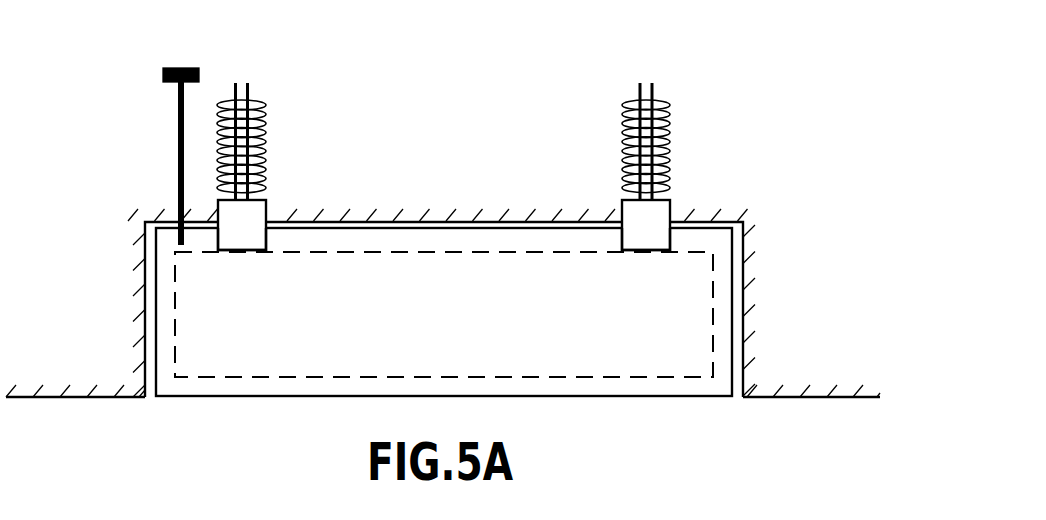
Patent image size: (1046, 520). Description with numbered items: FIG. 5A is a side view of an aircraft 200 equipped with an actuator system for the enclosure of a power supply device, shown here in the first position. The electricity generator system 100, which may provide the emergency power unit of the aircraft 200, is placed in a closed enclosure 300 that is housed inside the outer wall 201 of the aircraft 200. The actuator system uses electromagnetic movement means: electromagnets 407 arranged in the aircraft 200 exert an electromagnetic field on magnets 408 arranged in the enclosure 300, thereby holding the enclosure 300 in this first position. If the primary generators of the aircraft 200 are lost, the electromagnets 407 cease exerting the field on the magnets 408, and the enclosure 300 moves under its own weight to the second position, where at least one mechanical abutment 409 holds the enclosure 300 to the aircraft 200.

The electricity generator system 100 is at (618, 379).
The aircraft 200 is at (818, 352).
The outer wall 201 is at (805, 398).
The enclosure 300 is at (240, 399).
The electromagnets 407 is at (255, 207).
The magnets 408 is at (246, 243).
The mechanical abutment 409 is at (181, 68).